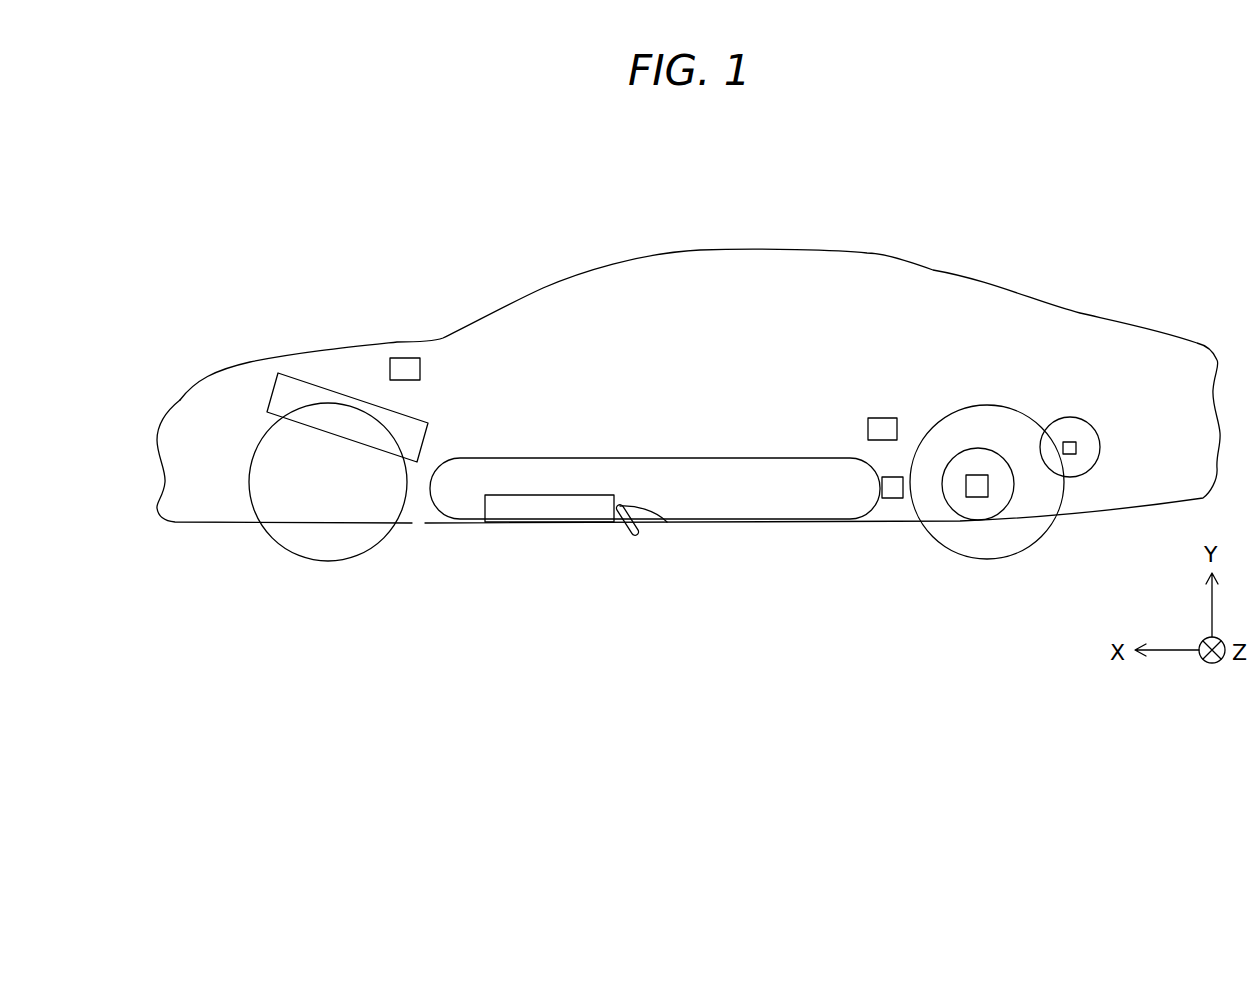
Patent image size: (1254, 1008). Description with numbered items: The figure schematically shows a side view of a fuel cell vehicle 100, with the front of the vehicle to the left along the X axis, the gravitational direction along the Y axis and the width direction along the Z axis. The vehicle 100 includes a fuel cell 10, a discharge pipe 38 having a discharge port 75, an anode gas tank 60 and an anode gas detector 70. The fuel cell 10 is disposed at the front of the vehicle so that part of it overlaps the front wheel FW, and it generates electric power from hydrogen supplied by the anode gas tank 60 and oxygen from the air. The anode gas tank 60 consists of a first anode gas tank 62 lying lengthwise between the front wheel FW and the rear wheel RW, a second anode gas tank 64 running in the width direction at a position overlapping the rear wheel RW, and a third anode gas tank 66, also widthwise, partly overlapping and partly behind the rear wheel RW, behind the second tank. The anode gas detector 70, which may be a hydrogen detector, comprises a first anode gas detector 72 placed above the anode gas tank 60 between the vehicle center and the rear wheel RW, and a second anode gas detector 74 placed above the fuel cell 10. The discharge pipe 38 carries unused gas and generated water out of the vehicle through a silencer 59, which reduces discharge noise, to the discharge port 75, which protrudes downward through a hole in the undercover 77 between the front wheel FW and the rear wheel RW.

The vehicle 100 is at (946, 264).
The fuel cell stack 10 is at (328, 389).
The discharge pipe 38 is at (667, 522).
The silencer 59 is at (570, 512).
The anode gas tank 60 is at (1120, 603).
The first anode gas tank 62 is at (815, 508).
The second anode gas tank 64 is at (952, 492).
The third anode gas tank 66 is at (1073, 465).
The anode gas detector 70 is at (910, 197).
The first anode gas detector 72 is at (880, 417).
The second anode gas detector 74 is at (403, 358).
The discharge port 75 is at (636, 533).
The undercover 77 is at (463, 527).
The front wheel FW is at (280, 547).
The rear wheel RW is at (998, 405).